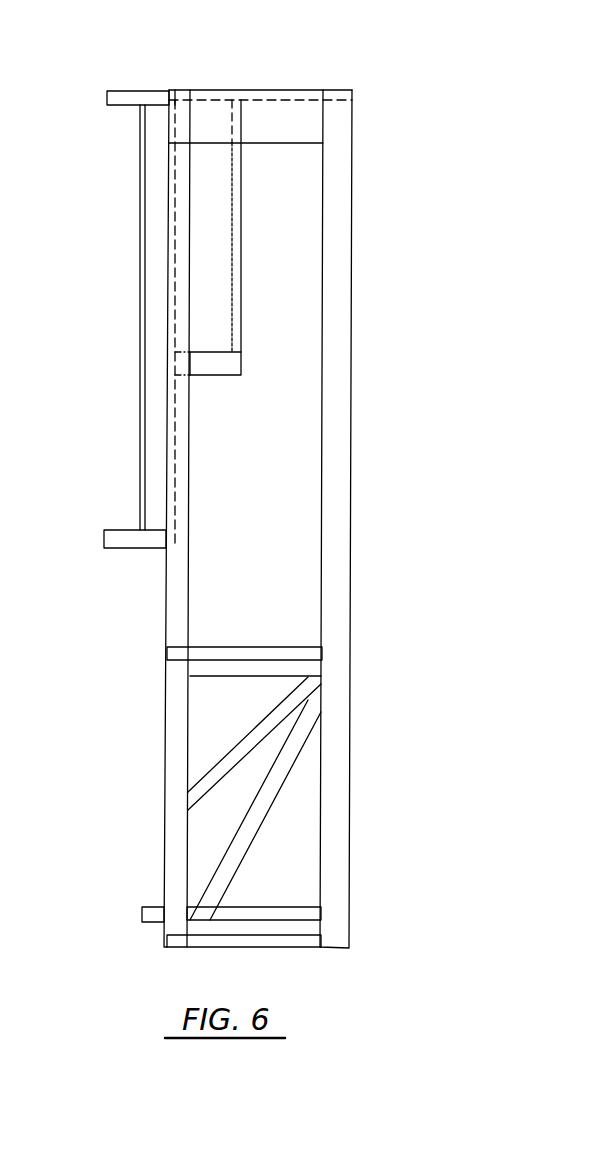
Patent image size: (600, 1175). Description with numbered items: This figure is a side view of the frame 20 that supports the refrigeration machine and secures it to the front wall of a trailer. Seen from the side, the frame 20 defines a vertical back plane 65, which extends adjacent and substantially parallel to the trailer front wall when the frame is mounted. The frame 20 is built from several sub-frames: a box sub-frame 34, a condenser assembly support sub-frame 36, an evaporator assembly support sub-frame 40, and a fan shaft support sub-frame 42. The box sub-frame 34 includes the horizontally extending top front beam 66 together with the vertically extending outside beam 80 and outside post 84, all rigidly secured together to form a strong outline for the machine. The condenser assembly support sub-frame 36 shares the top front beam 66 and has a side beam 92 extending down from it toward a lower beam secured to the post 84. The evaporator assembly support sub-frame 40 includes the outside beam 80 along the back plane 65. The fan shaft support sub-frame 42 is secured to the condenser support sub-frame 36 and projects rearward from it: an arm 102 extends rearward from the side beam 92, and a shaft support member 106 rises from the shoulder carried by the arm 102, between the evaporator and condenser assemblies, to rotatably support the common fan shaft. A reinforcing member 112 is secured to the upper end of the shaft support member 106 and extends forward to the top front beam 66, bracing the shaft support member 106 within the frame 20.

The frame 20 is at (242, 474).
The box sub-frame 34 is at (149, 622).
The condenser assembly support sub-frame 36 is at (104, 287).
The evaporator assembly support sub-frame 40 is at (258, 487).
The fan shaft support sub-frame 42 is at (248, 279).
The back plane 65 is at (354, 261).
The top front beam 66 is at (128, 97).
The outside beam 80 is at (335, 641).
The outside post 84 is at (174, 821).
The side beam 92 is at (150, 331).
The second arm 102 is at (222, 366).
The shaft support member 106 is at (238, 238).
The reinforcing member 112 is at (259, 96).